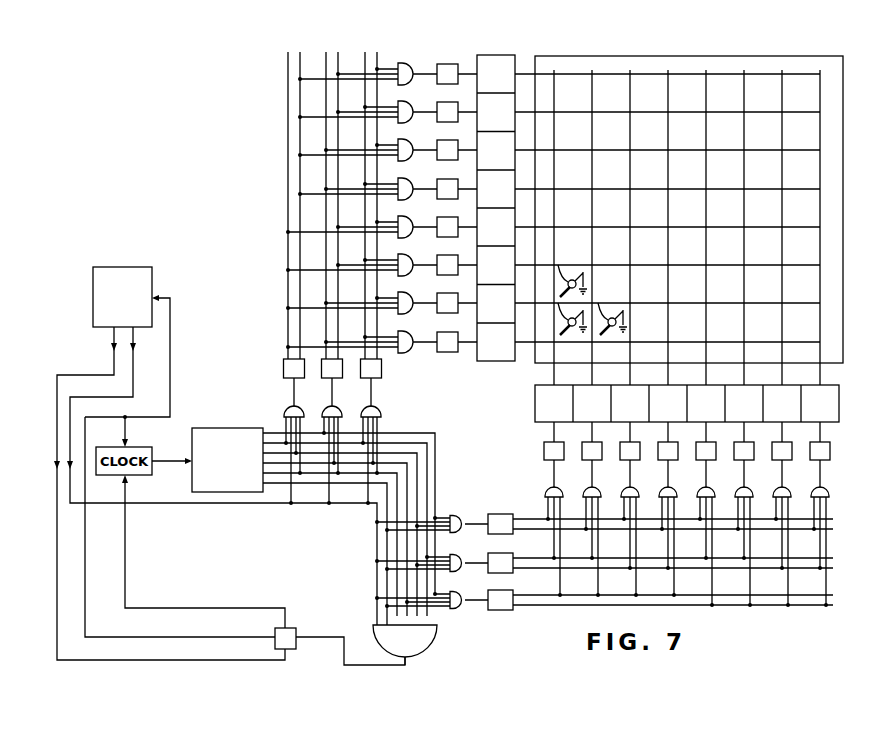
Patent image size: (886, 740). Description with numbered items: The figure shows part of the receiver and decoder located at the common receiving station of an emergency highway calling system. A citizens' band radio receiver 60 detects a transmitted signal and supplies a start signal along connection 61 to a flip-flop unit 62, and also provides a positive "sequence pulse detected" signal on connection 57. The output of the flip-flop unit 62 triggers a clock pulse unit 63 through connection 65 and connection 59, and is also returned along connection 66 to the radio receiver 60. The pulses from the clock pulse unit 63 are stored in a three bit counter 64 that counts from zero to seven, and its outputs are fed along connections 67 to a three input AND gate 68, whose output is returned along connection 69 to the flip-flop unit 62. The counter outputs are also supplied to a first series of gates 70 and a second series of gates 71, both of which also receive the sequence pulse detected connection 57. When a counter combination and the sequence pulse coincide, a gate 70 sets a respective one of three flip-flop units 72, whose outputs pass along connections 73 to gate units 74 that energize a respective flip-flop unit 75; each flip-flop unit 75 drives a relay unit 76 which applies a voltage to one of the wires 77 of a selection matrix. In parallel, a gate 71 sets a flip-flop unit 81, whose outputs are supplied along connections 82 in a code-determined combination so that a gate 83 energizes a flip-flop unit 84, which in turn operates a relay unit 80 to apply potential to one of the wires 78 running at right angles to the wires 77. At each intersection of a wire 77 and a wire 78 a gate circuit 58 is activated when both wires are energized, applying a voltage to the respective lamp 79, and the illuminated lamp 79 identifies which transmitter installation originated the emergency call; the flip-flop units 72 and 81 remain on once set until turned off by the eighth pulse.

The sequence pulse detected connection 57 is at (133, 397).
The gate circuits 58 is at (606, 347).
The connection 59 is at (192, 608).
The citizens' band radio receiver 60 is at (130, 267).
The connection 61 is at (103, 375).
The flip-flop unit 62 is at (297, 628).
The clock pulse unit 63 is at (129, 479).
The three bit counter 64 is at (235, 428).
The connection 65 is at (126, 426).
The connection 66 is at (171, 368).
The connections 67 is at (281, 442).
The three input AND gate 68 is at (435, 631).
The connection 69 is at (420, 664).
The first series of gates 70 is at (396, 412).
The second series of gates 71 is at (457, 508).
The flip-flop units 72 is at (390, 368).
The connections 73 is at (283, 52).
The gate units 74 is at (404, 58).
The flip-flop units 75 is at (448, 58).
The relay units 76 is at (494, 49).
The wires 77 is at (529, 72).
The wires 78 is at (597, 385).
The lamps 79 is at (583, 274).
The relay units 80 is at (847, 402).
The flip-flop units 81 is at (500, 507).
The connections 82 is at (841, 515).
The gates 83 is at (840, 492).
The flip-flop units 84 is at (843, 448).